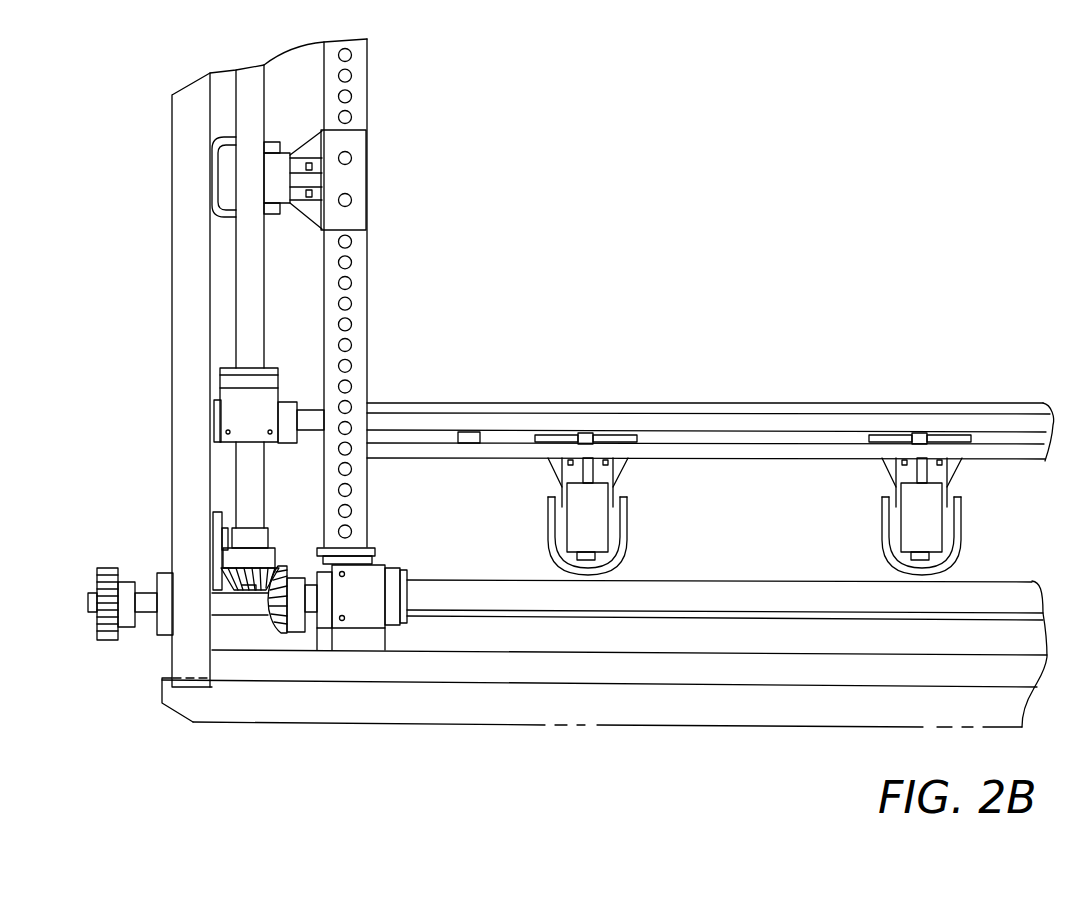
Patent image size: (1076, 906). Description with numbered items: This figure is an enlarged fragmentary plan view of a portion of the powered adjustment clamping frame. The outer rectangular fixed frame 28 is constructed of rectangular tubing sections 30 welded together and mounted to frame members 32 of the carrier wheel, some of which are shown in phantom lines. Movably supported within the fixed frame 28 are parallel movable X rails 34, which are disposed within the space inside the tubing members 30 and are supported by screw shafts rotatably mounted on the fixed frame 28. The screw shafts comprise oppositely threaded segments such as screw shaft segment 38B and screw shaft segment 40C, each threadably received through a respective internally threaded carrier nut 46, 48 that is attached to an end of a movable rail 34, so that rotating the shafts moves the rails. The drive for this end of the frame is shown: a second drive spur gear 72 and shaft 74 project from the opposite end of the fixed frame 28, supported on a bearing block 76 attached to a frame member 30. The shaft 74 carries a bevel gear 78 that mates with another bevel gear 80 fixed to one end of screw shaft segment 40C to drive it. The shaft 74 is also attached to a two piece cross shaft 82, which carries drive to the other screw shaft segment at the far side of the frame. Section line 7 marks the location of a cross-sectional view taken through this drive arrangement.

The outer rectangular fixed frame 28 is at (168, 315).
The rectangular tubing sections 30 is at (183, 252).
The frame members 32 is at (330, 724).
The X rails 34 is at (666, 423).
The screw shaft segment 38B is at (448, 586).
The screw shaft segment 40C is at (268, 283).
The carrier nut 46 is at (368, 608).
The carrier nut 48 is at (236, 407).
The second drive spur gear 72 is at (102, 568).
The shaft 74 is at (145, 612).
The bearing block 76 is at (168, 573).
The bevel gear 78 is at (282, 634).
The bevel gear 80 is at (252, 565).
The two piece cross shaft 82 is at (571, 620).
The section line 7- 7 is at (523, 318).